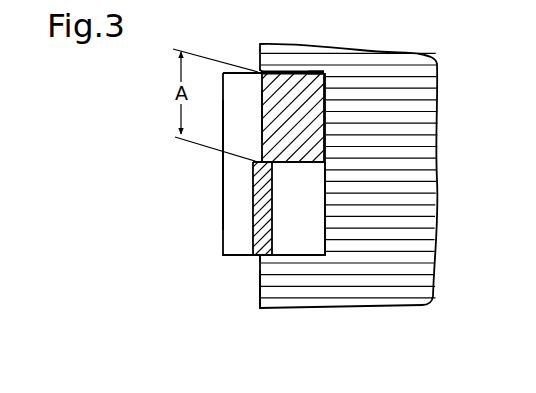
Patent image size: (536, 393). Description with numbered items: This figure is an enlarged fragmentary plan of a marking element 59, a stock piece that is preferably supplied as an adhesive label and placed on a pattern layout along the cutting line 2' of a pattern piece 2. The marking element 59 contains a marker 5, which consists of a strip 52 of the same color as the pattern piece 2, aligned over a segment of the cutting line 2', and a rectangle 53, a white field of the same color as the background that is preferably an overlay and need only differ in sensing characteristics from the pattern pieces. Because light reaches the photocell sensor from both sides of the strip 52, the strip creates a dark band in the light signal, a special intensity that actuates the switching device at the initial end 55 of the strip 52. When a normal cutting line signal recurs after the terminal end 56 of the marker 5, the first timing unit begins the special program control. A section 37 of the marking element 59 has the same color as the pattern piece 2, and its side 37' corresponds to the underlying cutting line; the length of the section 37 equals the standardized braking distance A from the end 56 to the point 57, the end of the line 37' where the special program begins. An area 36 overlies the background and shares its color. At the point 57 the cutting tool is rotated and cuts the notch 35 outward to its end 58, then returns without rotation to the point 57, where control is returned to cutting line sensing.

The pattern piece 2 is at (365, 176).
The cutting line 2' is at (231, 302).
The marker 5 is at (240, 235).
The notch 35 is at (282, 72).
The area 36 is at (233, 199).
The section 37 is at (319, 117).
The side of section 37' is at (245, 116).
The strip 52 is at (267, 210).
The rectangle 53 is at (311, 246).
The initial end of strip 55 is at (257, 258).
The terminal end of strip 56 is at (249, 165).
The end of line 37' 57 is at (256, 71).
The end of notch 58 is at (312, 72).
The marking element 59 is at (330, 202).